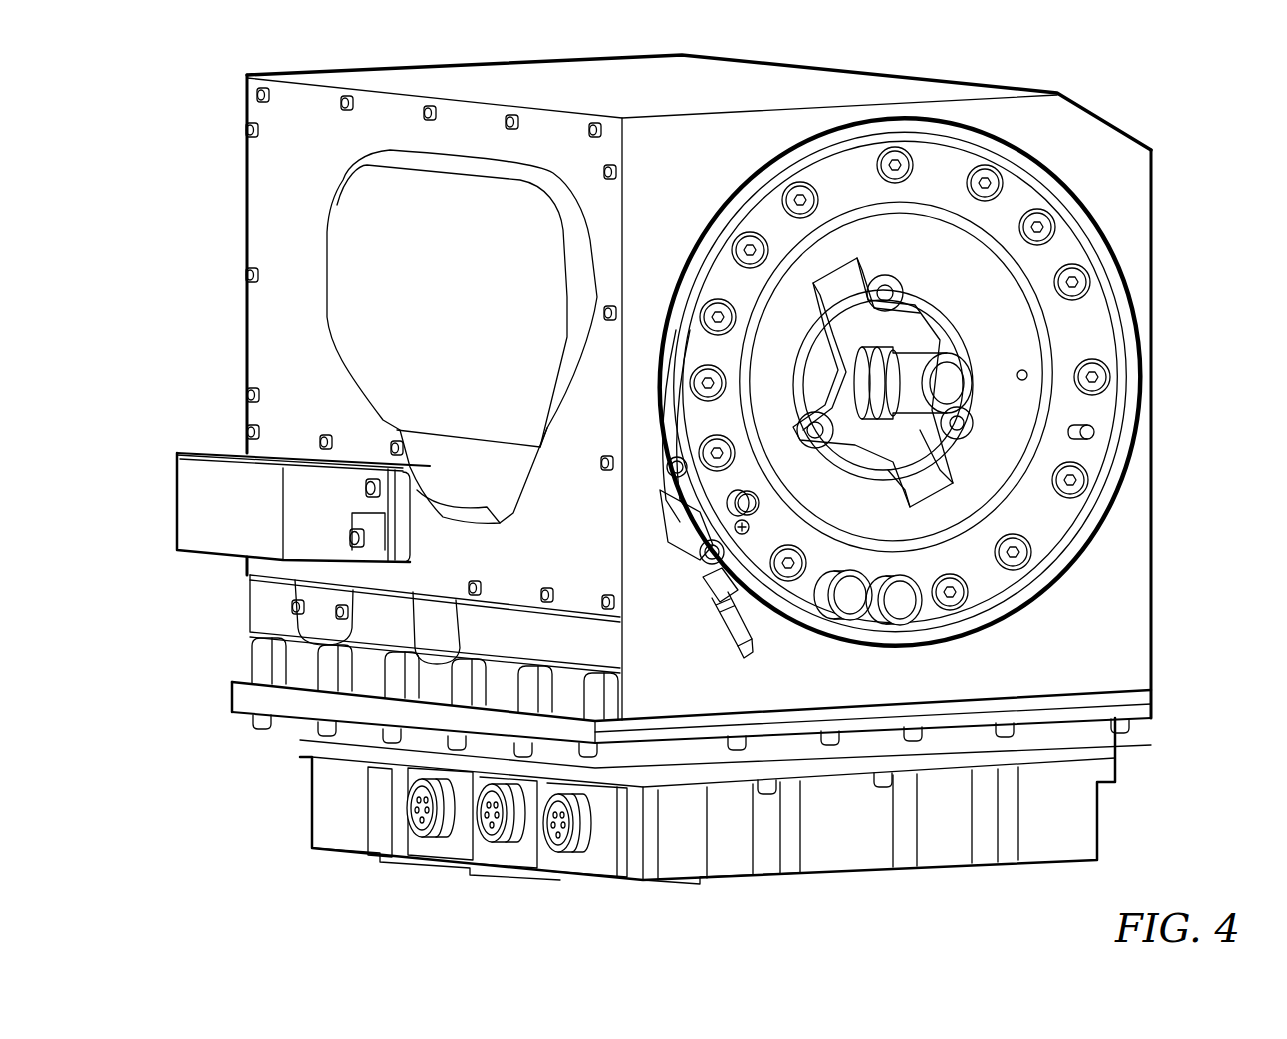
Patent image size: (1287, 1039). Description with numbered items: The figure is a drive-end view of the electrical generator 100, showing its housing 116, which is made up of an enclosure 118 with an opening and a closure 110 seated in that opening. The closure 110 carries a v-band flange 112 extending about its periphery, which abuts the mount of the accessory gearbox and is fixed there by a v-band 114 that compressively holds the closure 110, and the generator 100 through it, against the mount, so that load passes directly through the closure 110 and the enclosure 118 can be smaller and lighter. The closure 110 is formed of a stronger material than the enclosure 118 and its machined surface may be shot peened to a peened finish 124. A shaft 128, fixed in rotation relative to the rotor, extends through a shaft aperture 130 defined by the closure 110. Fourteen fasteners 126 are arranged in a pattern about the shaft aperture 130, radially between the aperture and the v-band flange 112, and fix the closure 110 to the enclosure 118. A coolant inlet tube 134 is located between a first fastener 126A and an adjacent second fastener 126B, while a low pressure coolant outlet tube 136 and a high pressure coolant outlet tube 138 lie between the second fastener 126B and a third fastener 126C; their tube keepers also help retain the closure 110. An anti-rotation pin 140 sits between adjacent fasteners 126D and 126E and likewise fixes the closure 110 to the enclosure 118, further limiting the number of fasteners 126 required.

The electrical generator 100 is at (303, 868).
The closure 110 is at (980, 298).
The v-band flange 112 is at (700, 513).
The v-band 114 is at (830, 655).
The housing 116 is at (190, 860).
The enclosure 118 is at (300, 196).
The peened finish 124 is at (786, 326).
The fasteners 126 is at (985, 183).
The first fastener 126A is at (717, 453).
The second fastener 126B is at (787, 567).
The third fastener 126C is at (948, 590).
The fastener 126D is at (1092, 377).
The fastener 126E is at (1067, 485).
The shaft 128 is at (907, 407).
The shaft aperture 130 is at (860, 412).
The coolant inlet tube 134 is at (712, 577).
The low pressure coolant outlet tube 136 is at (848, 620).
The high pressure coolant outlet tube 138 is at (900, 625).
The anti-rotation pin 140 is at (1094, 432).